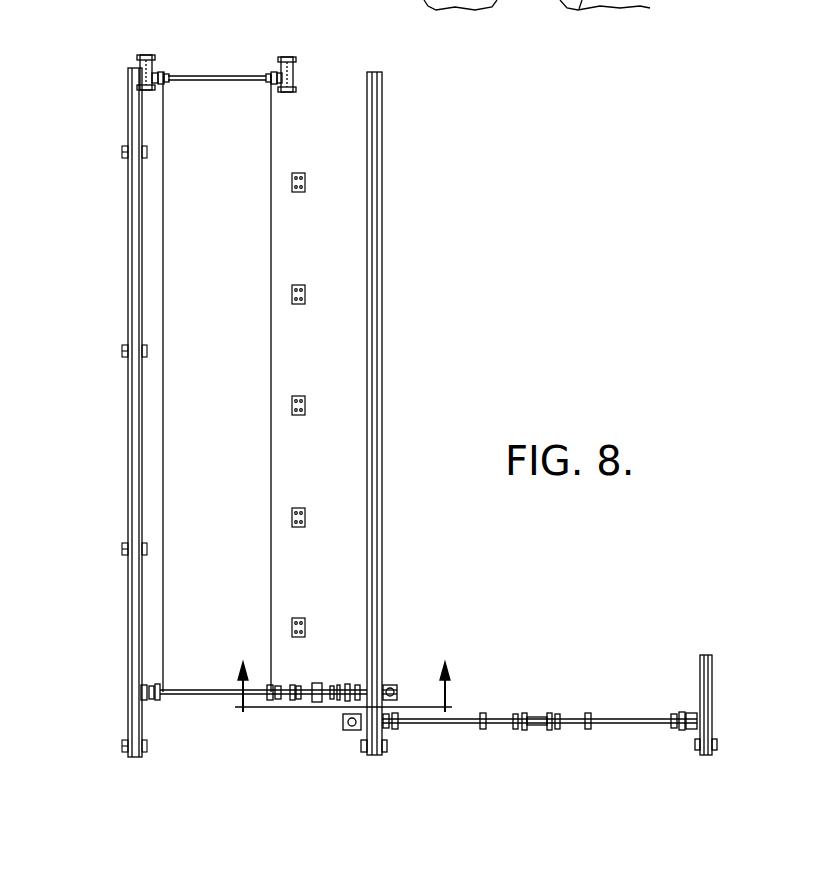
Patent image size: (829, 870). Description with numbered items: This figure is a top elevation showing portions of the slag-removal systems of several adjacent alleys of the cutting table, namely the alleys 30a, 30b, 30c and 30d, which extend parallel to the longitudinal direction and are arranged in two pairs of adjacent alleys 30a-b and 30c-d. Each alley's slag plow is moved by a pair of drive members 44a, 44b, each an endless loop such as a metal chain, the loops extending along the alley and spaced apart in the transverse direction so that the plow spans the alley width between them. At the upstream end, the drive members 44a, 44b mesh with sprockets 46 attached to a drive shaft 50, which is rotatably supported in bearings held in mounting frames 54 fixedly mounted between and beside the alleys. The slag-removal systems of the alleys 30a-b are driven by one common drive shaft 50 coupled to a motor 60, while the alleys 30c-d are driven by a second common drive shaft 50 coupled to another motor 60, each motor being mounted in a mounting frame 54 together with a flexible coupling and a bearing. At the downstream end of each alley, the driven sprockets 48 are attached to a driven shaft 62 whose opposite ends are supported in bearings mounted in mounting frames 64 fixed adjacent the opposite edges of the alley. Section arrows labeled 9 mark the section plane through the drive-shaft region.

The section line 9- 9 is at (340, 708).
The alley 30a is at (242, 225).
The alley 30b is at (345, 258).
The alley 30c is at (420, 384).
The alley 30d is at (598, 640).
The drive member 44a is at (164, 378).
The drive member 44b is at (270, 515).
The sprocket 46 is at (263, 690).
The driven sprocket 48 is at (163, 70).
The drive shaft 50 is at (190, 690).
The mounting frame 54 is at (300, 688).
The motor 60 is at (392, 686).
The driven shaft 62 is at (206, 80).
The mounting frame 64 is at (140, 70).